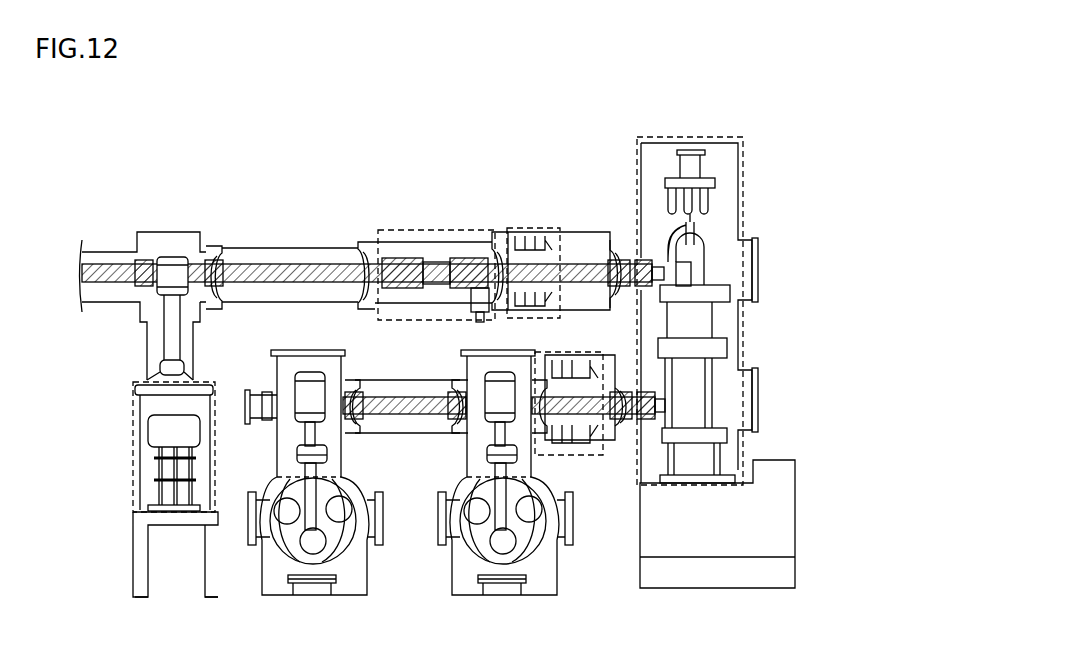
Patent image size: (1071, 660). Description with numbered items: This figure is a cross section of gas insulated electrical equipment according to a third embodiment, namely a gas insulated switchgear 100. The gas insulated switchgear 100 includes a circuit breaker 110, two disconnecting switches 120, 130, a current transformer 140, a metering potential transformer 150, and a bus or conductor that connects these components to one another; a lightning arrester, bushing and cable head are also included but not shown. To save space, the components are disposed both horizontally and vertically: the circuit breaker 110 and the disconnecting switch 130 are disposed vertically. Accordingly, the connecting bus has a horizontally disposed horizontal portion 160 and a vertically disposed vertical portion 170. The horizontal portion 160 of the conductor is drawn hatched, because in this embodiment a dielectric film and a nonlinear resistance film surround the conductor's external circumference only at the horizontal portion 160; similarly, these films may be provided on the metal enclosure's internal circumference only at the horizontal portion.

The gas insulated switchgear 100 is at (590, 108).
The circuit breaker 110 is at (697, 137).
The disconnecting switch 120 is at (432, 230).
The disconnecting switch 130 is at (352, 442).
The current transformer 140 is at (538, 228).
The metering potential transformer 150 is at (222, 405).
The horizontal portion 160 is at (112, 262).
The vertical portion 170 is at (703, 269).